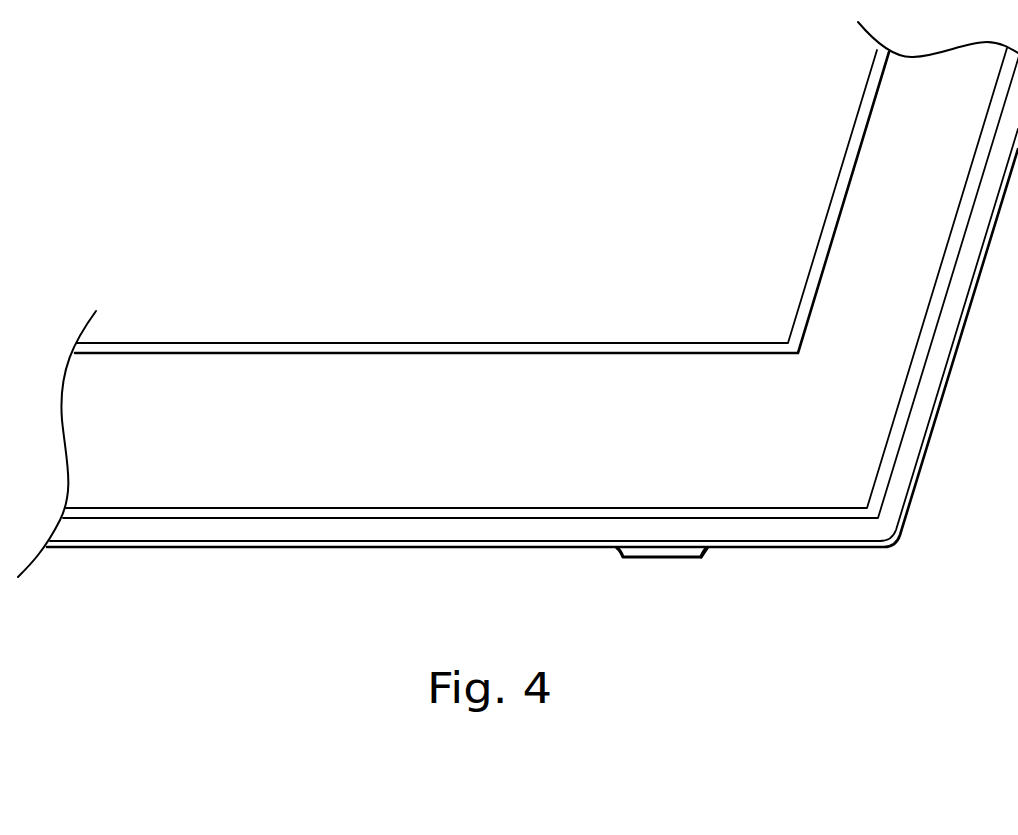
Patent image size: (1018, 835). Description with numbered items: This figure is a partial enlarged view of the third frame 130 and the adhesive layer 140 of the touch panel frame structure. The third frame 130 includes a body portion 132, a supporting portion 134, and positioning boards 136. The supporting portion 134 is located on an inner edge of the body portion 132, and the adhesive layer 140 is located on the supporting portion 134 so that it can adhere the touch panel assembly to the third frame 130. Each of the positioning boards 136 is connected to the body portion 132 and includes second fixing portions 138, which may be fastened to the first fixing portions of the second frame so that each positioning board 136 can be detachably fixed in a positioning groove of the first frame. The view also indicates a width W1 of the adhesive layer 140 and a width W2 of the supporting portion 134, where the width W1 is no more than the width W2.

The third frame 130 is at (532, 302).
The body portion 132 is at (728, 527).
The supporting portion 134 is at (598, 515).
The positioning boards 136 is at (658, 553).
The second fixing portions 138 is at (712, 554).
The adhesive layer 140 is at (728, 348).
The width of the adhesive layer W1 is at (863, 219).
The width of the supporting portion W2 is at (957, 327).